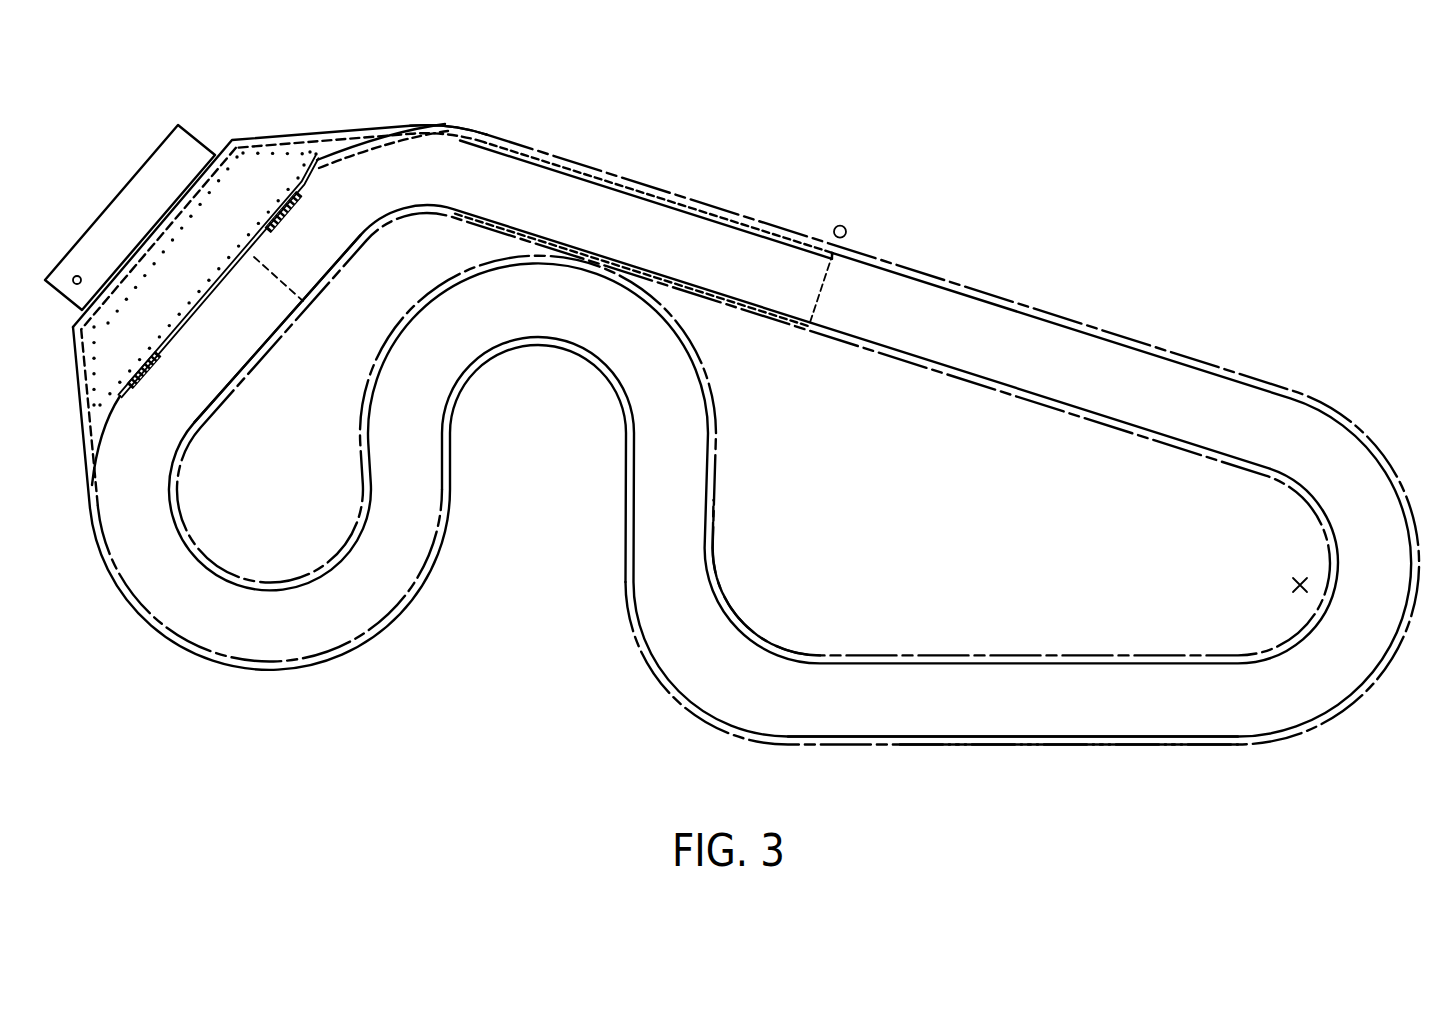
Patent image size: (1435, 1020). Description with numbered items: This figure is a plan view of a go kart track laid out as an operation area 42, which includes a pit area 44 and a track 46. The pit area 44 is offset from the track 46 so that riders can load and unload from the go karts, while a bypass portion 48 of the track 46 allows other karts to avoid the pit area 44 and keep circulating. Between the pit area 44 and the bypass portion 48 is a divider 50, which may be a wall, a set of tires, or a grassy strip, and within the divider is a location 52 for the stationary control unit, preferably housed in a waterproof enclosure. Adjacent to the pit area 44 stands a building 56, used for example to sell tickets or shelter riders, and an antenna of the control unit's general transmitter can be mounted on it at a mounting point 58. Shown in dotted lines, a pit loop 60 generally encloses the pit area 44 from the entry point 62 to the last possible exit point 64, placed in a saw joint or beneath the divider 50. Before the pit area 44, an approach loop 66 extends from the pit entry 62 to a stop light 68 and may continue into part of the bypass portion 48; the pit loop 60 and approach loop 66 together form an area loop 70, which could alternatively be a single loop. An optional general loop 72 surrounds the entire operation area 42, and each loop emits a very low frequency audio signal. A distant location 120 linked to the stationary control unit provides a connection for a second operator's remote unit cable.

The operation area 42 is at (514, 652).
The pit area 44 is at (264, 180).
The track 46 is at (853, 717).
The bypass portion 48 is at (266, 318).
The divider 50 is at (203, 303).
The location 52 is at (272, 222).
The building 56 is at (190, 143).
The antenna mounting location 58 is at (73, 279).
The pit loop 60 is at (97, 404).
The entry point 62 is at (318, 160).
The last possible exit point 64 is at (120, 392).
The approach loop 66 is at (712, 223).
The stop light 68 is at (846, 229).
The area loop 70 is at (474, 110).
The general loop 72 is at (714, 588).
The distant location 120 is at (1292, 585).